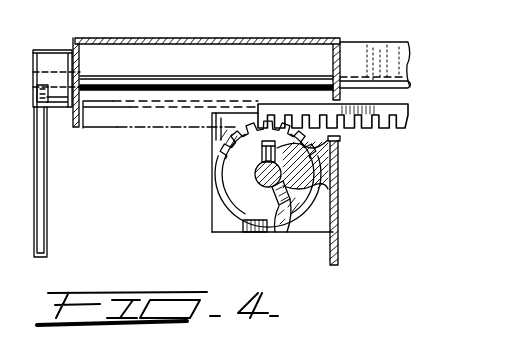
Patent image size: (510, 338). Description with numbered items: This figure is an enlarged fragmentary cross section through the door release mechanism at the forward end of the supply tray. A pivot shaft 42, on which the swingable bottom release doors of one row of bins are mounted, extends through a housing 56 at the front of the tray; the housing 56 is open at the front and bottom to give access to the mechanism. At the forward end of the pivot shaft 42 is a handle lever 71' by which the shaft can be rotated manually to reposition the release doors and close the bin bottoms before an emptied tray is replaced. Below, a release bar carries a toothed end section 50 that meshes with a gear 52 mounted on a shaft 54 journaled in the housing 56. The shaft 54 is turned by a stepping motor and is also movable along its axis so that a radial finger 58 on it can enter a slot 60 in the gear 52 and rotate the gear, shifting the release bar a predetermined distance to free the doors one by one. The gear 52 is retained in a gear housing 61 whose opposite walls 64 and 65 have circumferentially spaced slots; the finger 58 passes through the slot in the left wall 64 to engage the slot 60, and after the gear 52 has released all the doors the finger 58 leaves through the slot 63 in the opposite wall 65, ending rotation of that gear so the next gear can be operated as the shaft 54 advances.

The pivot shaft 42 is at (103, 83).
The toothed end section 50 is at (387, 130).
The gear 52 is at (237, 187).
The shaft 54 is at (247, 229).
The housing 56 is at (177, 40).
The radial finger 58 is at (339, 141).
The slot 60 is at (262, 150).
The gear housing 61 is at (208, 179).
The slot 63 is at (283, 215).
The wall 64 is at (238, 210).
The wall 65 is at (325, 218).
The handle lever 71' is at (61, 182).